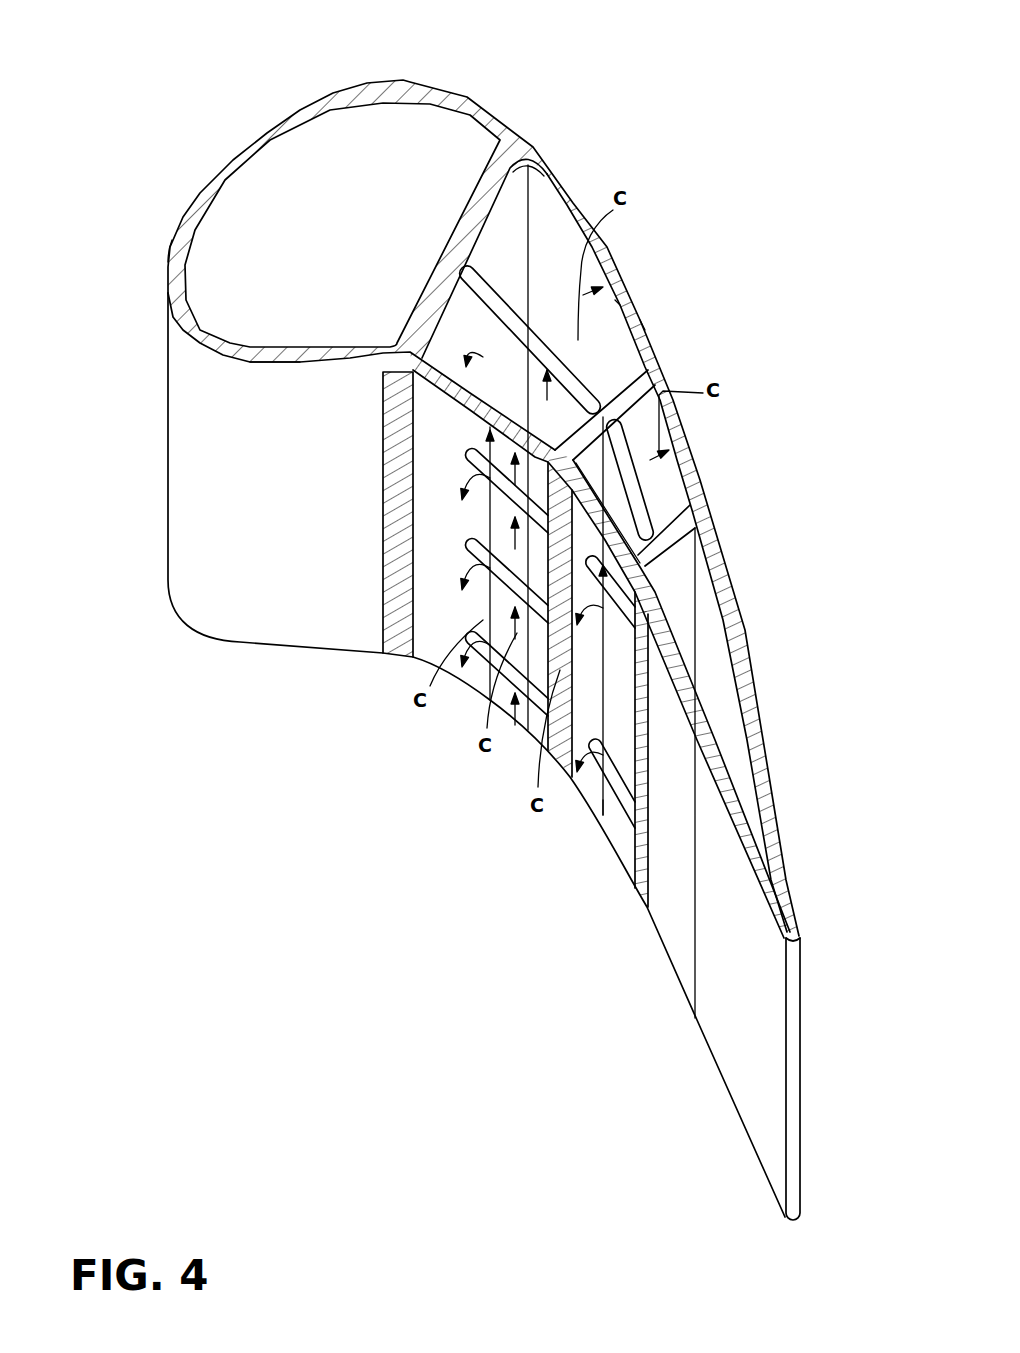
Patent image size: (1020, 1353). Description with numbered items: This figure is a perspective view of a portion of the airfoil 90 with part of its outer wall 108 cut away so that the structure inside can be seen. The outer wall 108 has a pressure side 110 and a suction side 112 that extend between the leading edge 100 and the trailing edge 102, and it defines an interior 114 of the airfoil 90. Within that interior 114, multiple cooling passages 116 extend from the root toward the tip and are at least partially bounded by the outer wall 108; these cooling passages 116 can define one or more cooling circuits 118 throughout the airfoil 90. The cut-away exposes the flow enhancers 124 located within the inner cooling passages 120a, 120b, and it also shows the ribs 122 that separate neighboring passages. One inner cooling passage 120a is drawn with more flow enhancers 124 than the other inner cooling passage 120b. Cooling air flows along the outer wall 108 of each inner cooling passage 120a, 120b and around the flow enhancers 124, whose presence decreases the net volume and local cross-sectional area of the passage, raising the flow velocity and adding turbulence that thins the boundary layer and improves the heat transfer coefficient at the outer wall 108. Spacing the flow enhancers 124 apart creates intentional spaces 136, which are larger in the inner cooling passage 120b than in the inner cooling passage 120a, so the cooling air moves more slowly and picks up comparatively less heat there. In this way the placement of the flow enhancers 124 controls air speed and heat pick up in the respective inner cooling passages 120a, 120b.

The airfoil 90 is at (134, 101).
The leading edge 100 is at (182, 338).
The trailing edge 102 is at (793, 1090).
The outer wall 108 is at (790, 850).
The pressure side 110 is at (290, 362).
The suction side 112 is at (627, 360).
The interior 114 is at (230, 502).
The cooling passages 116 is at (220, 250).
The cooling circuits 118 is at (616, 328).
The inner cooling passage 120a is at (648, 358).
The inner cooling passage 120b is at (670, 477).
The rib 122 is at (463, 235).
The flow enhancers 124 is at (500, 287).
The intentional spaces 136 is at (612, 700).